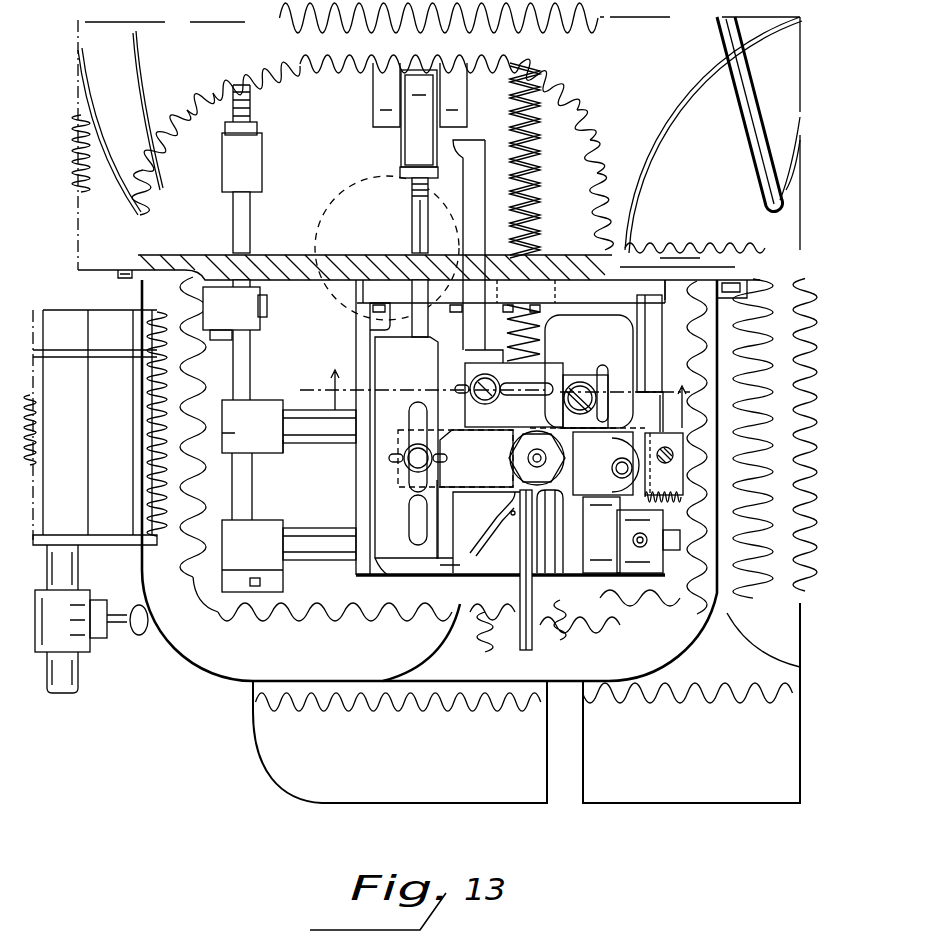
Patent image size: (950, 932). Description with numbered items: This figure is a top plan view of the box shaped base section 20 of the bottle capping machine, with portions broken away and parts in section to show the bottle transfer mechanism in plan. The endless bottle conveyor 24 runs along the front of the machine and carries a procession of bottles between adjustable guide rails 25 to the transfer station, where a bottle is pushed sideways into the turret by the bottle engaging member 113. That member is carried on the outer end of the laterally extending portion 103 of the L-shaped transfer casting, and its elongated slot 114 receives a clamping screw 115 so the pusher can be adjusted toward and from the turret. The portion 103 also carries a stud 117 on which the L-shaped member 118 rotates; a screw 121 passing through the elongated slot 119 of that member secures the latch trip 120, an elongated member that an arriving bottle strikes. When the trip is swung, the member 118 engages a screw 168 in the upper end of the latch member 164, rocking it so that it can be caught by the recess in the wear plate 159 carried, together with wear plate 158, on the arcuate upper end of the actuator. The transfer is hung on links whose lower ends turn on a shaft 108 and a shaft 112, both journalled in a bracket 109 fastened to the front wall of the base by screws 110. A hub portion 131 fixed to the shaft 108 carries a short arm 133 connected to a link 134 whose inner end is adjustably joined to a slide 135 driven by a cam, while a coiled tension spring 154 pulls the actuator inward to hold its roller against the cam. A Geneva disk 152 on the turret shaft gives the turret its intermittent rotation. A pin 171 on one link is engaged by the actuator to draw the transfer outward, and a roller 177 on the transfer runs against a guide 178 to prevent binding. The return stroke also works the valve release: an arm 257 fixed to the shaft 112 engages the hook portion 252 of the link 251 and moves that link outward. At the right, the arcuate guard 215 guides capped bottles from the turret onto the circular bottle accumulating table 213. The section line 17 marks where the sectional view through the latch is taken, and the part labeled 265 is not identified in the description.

The section line 17- 17 is at (507, 389).
The base section 20 is at (371, 143).
The endless bottle conveyor 24 is at (105, 423).
The adjustable guide rails 25 is at (122, 346).
The laterally extending portion 103 is at (455, 458).
The shaft 108 is at (299, 530).
The bracket 109 is at (375, 326).
The screws 110 is at (553, 306).
The shaft 112 is at (322, 414).
The bottle engaging member 113 is at (407, 447).
The elongated slot 114 is at (414, 521).
The clamping screw 115 is at (415, 440).
The stud 117 is at (524, 450).
The L-shaped member 118 is at (495, 395).
The elongated slot 119 is at (537, 386).
The latch trip 120 is at (485, 182).
The screw 121 is at (472, 381).
The hub portion 131 is at (515, 577).
The short arm 133 is at (420, 579).
The link 134 is at (413, 232).
The slide 135 is at (376, 116).
The Geneva disk 152 is at (520, 612).
The coiled tension spring 154 is at (541, 202).
The wear plate 158 is at (534, 612).
The wear plate 159 is at (528, 470).
The latch member 164 is at (587, 378).
The screw 168 is at (584, 420).
The pin 171 is at (541, 579).
The roller 177 is at (616, 486).
The guide 178 is at (683, 476).
The bottle accumulating table 213 is at (713, 135).
The arcuate guard 215 is at (746, 118).
The link 251 is at (253, 100).
The hook portion 252 is at (250, 385).
The arm 257 is at (253, 400).
The bar 265 is at (247, 501).